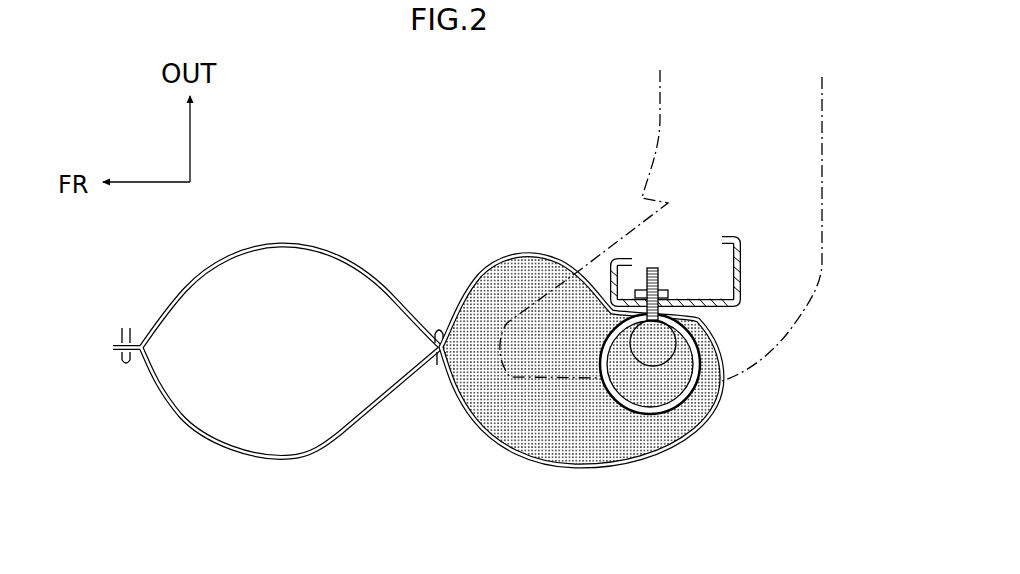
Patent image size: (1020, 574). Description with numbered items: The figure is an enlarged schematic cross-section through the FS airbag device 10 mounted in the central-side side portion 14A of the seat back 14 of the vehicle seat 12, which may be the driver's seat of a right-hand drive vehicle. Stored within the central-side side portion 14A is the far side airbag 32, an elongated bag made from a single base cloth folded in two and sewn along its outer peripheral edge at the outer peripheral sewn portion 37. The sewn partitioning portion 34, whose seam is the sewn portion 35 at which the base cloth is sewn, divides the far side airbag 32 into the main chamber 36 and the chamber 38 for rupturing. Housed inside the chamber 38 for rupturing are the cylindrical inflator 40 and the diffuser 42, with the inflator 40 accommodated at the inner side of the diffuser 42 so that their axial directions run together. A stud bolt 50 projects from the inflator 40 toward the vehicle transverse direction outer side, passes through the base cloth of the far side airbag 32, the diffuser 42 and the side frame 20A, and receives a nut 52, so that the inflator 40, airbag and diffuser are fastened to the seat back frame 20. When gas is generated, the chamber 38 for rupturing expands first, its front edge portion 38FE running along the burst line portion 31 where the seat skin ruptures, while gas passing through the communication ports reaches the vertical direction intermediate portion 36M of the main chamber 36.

The FS airbag device 10 is at (478, 194).
The vehicle seat 12 is at (772, 229).
The seat back 14 is at (650, 97).
The central-side side portion 14A is at (596, 249).
The seat back frame 20 is at (695, 231).
The side frame 20A is at (722, 233).
The burst line portion 31 is at (498, 378).
The far side airbag 32 is at (367, 211).
The sewn partitioning portion 34 is at (423, 300).
The sewn portion 35 is at (442, 330).
The main chamber 36 is at (237, 462).
The vertical direction intermediate portion 36M is at (302, 460).
The outer peripheral sewn portion 37 is at (124, 370).
The chamber for rupturing 38 is at (531, 460).
The front edge portion 38FE is at (428, 388).
The inflator 40 is at (670, 403).
The diffuser 42 is at (667, 373).
The stud bolt 50 is at (650, 268).
The nut 52 is at (668, 293).